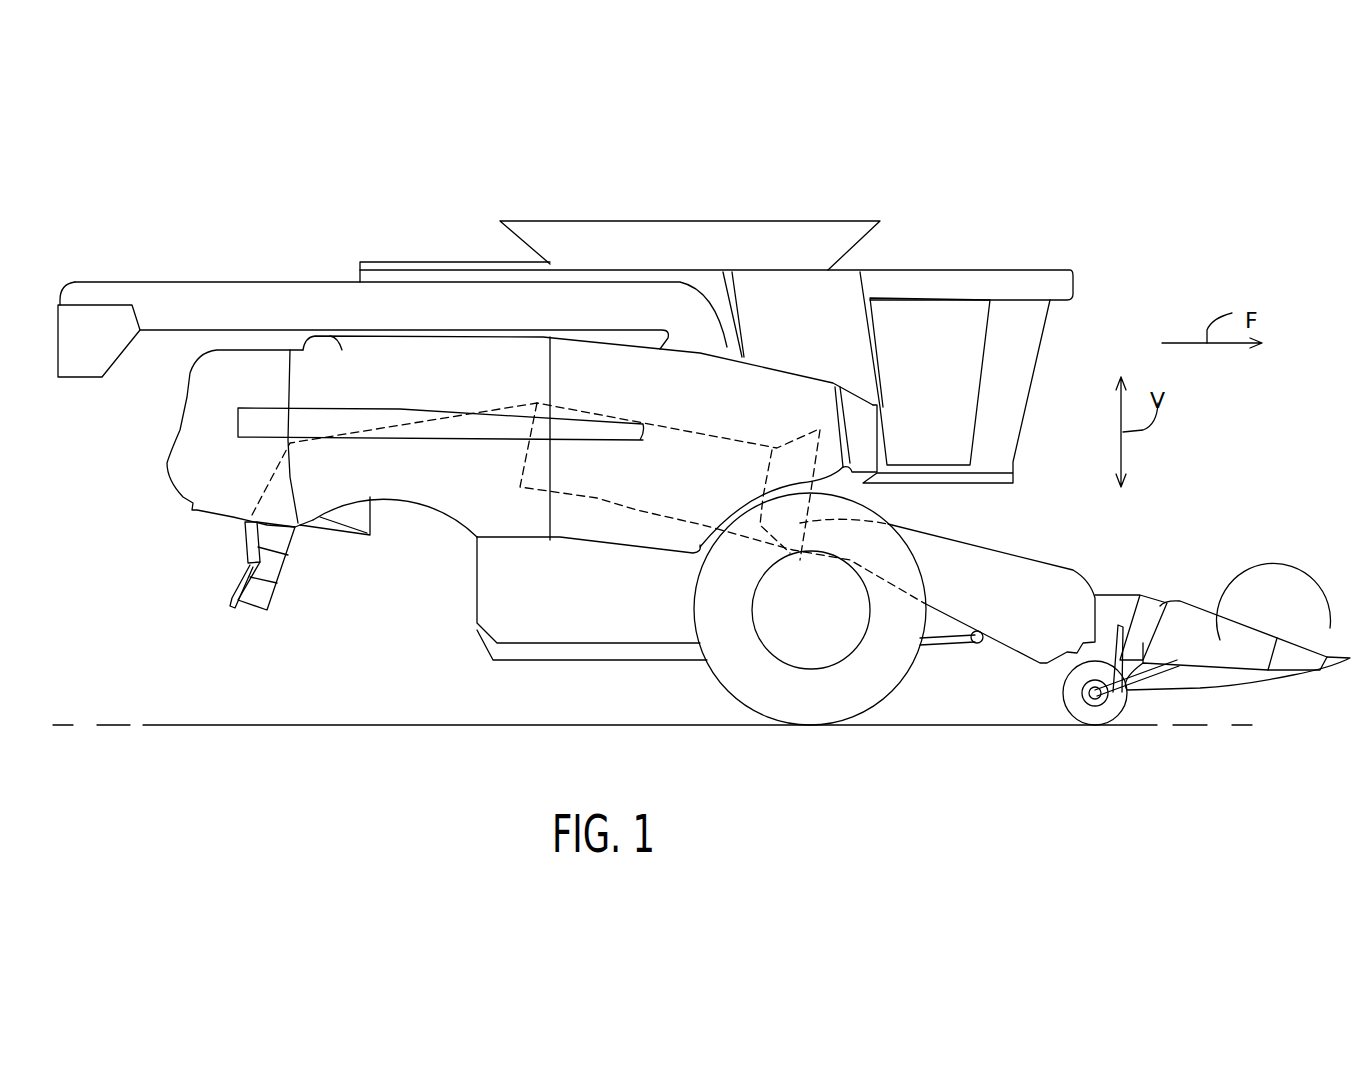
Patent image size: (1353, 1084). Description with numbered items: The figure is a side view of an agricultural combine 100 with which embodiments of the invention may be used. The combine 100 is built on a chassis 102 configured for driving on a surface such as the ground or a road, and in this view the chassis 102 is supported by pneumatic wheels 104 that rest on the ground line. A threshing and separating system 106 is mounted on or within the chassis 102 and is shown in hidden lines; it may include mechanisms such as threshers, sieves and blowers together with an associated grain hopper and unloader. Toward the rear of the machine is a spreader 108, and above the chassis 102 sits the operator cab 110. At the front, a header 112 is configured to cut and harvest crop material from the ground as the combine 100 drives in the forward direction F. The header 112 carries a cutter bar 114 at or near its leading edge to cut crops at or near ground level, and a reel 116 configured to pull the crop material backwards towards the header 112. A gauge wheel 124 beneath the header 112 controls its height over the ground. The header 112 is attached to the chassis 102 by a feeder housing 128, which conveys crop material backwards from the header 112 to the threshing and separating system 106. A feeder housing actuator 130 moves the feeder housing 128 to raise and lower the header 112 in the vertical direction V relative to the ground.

The agricultural combine 100 is at (565, 384).
The chassis 102 is at (532, 612).
The pneumatic wheels 104 is at (813, 700).
The threshing and separating system 106 is at (637, 510).
The spreader 108 is at (247, 577).
The operator cab 110 is at (942, 313).
The header 112 is at (1203, 657).
The cutter bar 114 is at (1262, 678).
The reel 116 is at (1240, 578).
The gauge wheel 124 is at (1107, 713).
The feeder housing 128 is at (1030, 630).
The feeder housing actuator 130 is at (945, 645).